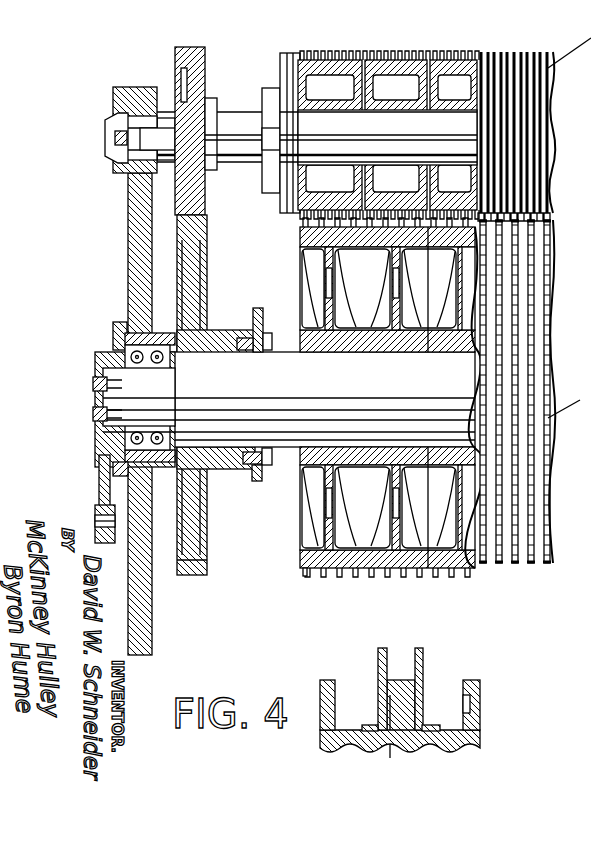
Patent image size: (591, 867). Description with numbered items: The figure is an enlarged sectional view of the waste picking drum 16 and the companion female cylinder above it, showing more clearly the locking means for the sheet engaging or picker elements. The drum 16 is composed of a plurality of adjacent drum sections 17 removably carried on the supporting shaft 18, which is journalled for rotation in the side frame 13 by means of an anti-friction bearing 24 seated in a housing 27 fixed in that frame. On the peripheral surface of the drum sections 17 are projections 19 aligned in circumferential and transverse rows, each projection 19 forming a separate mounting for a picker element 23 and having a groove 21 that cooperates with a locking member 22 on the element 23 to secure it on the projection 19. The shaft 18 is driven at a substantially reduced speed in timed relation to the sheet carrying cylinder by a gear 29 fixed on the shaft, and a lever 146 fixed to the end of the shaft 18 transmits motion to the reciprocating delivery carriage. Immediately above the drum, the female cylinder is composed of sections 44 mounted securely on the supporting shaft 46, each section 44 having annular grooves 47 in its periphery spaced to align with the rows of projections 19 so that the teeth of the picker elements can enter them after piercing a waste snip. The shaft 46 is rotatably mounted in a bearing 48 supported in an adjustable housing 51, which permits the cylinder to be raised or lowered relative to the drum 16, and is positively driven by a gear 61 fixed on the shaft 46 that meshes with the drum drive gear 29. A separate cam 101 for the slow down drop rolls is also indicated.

The side frame 13 is at (128, 237).
The waste picking drum 16 is at (455, 745).
The drum section 17 is at (460, 569).
The supporting shaft 18 is at (322, 388).
The projection 19 is at (370, 569).
The groove 21 is at (305, 568).
The locking member 22 is at (388, 700).
The element 23 is at (418, 678).
The anti-friction bearing 24 is at (125, 357).
The housing 27 is at (125, 330).
The gear 29 is at (207, 270).
The section 44 is at (437, 58).
The supporting shaft 46 is at (238, 122).
The annular groove 47 is at (513, 52).
The bearing 48 is at (135, 95).
The adjustable housing 51 is at (150, 87).
The gear 61 is at (190, 47).
The cam 101 is at (254, 318).
The lever 146 is at (100, 470).